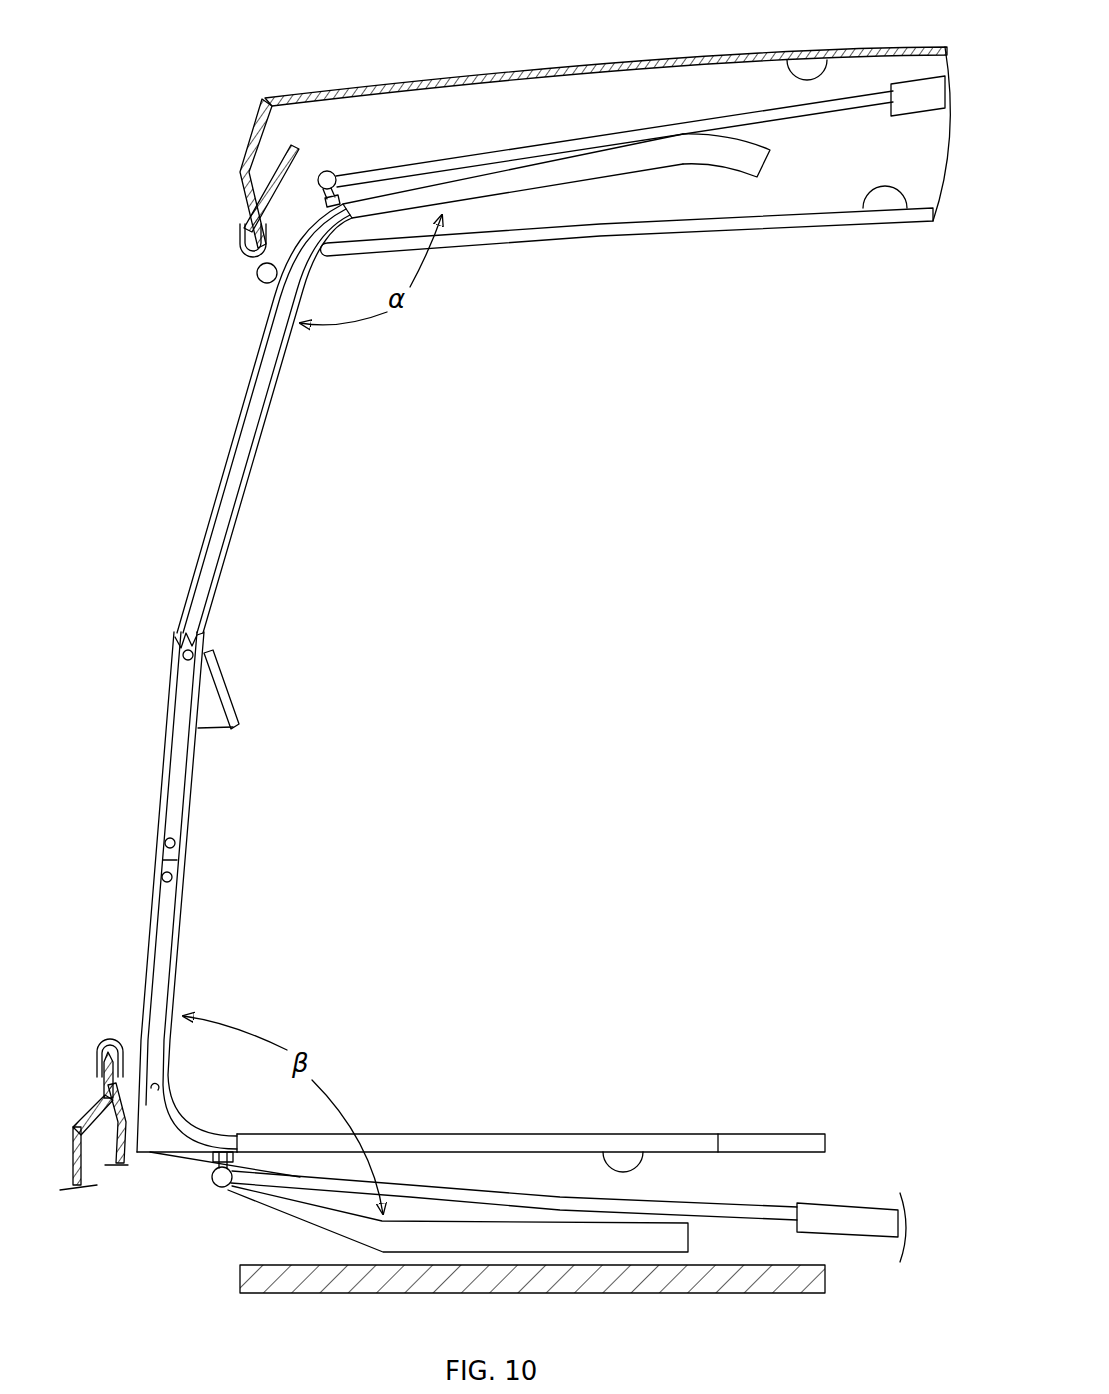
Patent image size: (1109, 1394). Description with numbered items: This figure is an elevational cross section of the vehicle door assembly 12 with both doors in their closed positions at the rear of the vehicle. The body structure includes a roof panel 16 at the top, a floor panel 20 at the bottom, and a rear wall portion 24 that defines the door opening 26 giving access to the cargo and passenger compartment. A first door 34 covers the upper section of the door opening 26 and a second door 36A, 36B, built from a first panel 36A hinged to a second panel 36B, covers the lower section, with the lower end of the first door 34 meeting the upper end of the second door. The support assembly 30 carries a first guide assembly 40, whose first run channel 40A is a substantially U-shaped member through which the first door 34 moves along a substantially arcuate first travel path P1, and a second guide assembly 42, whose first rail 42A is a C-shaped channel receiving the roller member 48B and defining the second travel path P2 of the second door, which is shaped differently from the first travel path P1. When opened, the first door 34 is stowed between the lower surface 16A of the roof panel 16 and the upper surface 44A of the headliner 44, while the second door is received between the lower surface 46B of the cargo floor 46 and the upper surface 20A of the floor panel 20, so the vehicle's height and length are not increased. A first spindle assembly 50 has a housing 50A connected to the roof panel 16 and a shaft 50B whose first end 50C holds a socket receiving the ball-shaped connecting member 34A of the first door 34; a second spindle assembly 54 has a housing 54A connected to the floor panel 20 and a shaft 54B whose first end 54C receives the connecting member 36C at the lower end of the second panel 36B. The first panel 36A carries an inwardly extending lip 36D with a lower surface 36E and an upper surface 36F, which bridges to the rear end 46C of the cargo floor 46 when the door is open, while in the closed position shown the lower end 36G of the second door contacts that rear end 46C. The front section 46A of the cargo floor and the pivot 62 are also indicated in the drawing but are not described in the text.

The vehicle door assembly 12 is at (230, 437).
The roof panel 16 is at (692, 53).
The lower surface of the roof panel 16A is at (808, 53).
The floor panel 20 is at (340, 1295).
The upper surface of the floor panel 20A is at (700, 1264).
The rear wall portion 24 is at (247, 150).
The door opening 26 is at (240, 255).
The door support assembly 30 is at (186, 586).
The first door 34 is at (257, 392).
The connecting member 34A is at (328, 198).
The first panel 36A is at (182, 778).
The second panel 36B is at (162, 935).
The connecting member 36C is at (210, 1154).
The inwardly extending lip 36D is at (230, 688).
The lower surface of the lip 36E is at (233, 727).
The upper surface of the lip 36F is at (210, 652).
The lower end of the second door 36G is at (152, 1155).
The first guide assembly 40 is at (492, 210).
The first run channel 40A is at (667, 168).
The second guide assembly 42 is at (162, 748).
The first rail 42A is at (145, 1002).
The headliner 44 is at (760, 238).
The upper surface of the headliner 44A is at (912, 216).
The cargo floor 46 is at (455, 1133).
The seat pan front section 46A is at (545, 1133).
The lower surface of the cargo floor 46B is at (604, 1134).
The rear end of the cargo floor 46C is at (234, 1145).
The roller member 48B is at (180, 683).
The first spindle assembly 50 is at (820, 118).
The housing 50A is at (908, 84).
The shaft 50B is at (466, 155).
The first end of the shaft 50C is at (328, 171).
The second spindle assembly 54 is at (872, 1203).
The housing 54A is at (858, 1238).
The shaft 54B is at (757, 1205).
The first end of the shaft 54C is at (217, 1189).
The pivot pin 62 is at (260, 280).
The first travel path P1 is at (560, 188).
The second travel path P2 is at (213, 1158).